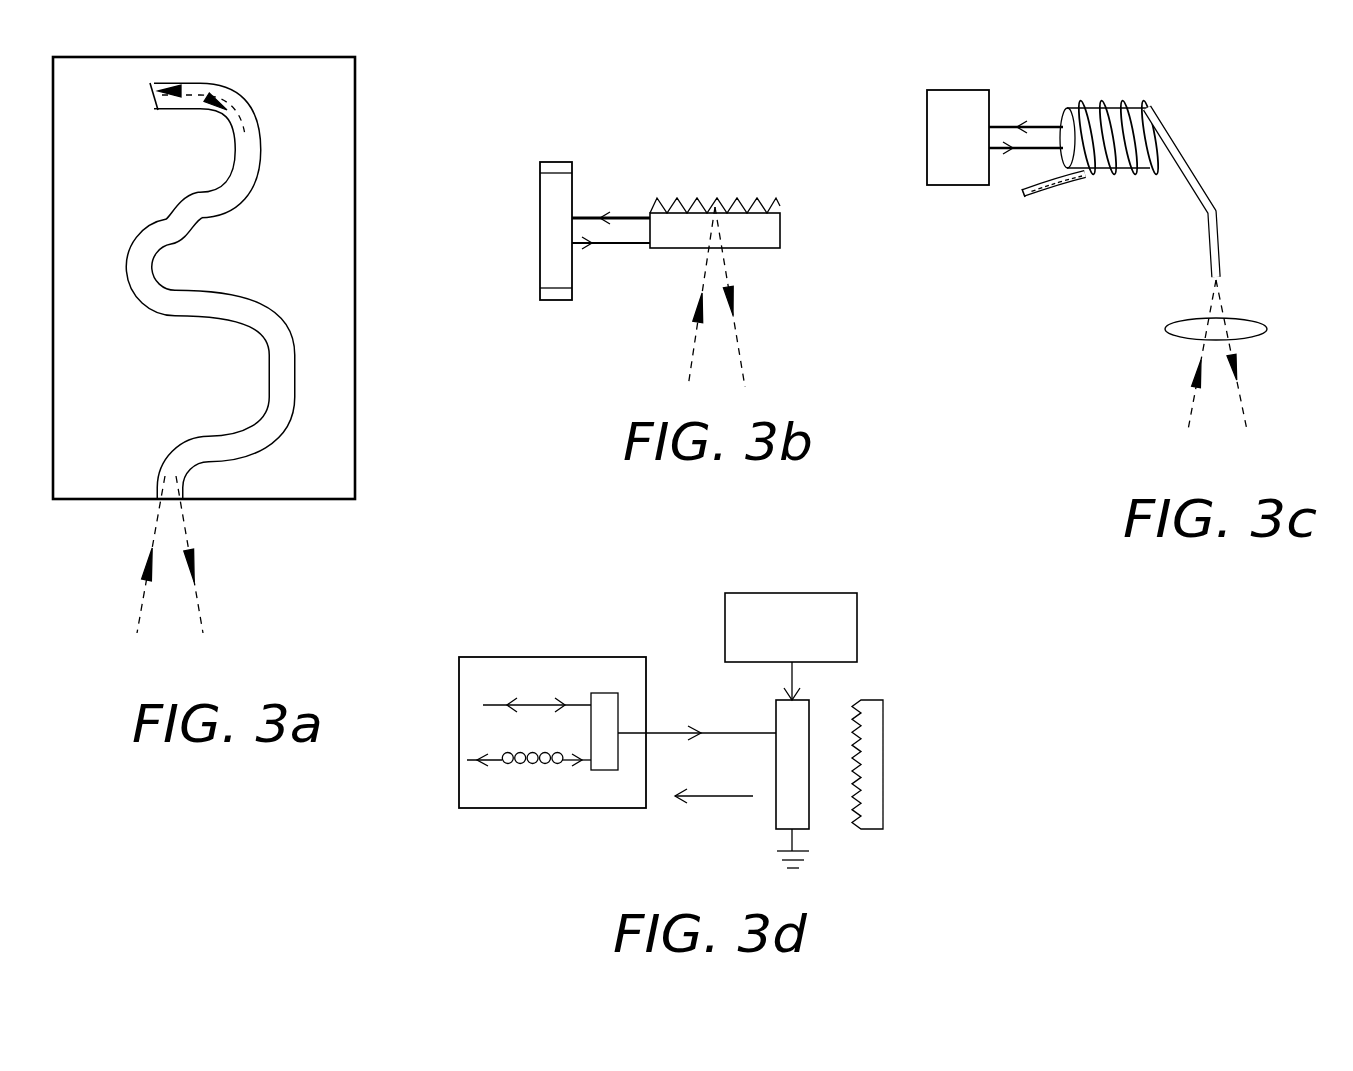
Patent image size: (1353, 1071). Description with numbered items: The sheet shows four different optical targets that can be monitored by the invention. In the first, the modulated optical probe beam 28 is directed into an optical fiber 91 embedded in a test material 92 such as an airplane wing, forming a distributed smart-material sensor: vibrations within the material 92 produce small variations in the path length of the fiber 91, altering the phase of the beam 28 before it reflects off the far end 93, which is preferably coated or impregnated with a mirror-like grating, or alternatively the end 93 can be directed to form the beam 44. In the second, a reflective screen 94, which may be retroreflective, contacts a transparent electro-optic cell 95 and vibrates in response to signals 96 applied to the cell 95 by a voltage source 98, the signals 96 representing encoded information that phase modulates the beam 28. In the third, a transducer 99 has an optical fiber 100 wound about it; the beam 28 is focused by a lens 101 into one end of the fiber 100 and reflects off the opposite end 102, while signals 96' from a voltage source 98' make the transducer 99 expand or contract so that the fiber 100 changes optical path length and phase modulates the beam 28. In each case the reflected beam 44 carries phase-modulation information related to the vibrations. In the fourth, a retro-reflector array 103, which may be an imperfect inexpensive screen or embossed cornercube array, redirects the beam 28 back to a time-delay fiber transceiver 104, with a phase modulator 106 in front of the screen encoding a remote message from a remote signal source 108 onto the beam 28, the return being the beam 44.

In FIG. 3A, the modulated optical probe beam 28 is at (140, 614).
In FIG. 3B, the modulated optical probe beam 28 is at (692, 348).
In FIG. 3C, the modulated optical probe beam 28 is at (1195, 392).
In FIG. 3D, the modulated optical probe beam 28 is at (730, 733).
In FIG. 3A, the reflected beam 44 is at (198, 598).
In FIG. 3B, the reflected beam 44 is at (738, 353).
In FIG. 3C, the reflected beam 44 is at (1242, 397).
In FIG. 3D, the reflected beam 44 is at (722, 805).
In FIG. 3A, the optical fiber 91 is at (200, 436).
In FIG. 3A, the test material 92 is at (337, 112).
In FIG. 3A, the far end of the optical fiber 93 is at (152, 96).
In FIG. 3B, the reflective screen 94 is at (732, 198).
In FIG. 3B, the transparent electro-optic cell 95 is at (782, 235).
In FIG. 3B, the signals 96 is at (611, 220).
In FIG. 3B, the voltage source 98 is at (520, 251).
In FIG. 3C, the signals 96' is at (996, 145).
In FIG. 3C, the voltage source 98' is at (915, 140).
In FIG. 3C, the transducer 99 is at (1063, 110).
In FIG. 3C, the optical fiber 100 is at (1117, 102).
In FIG. 3C, the lens 101 is at (1252, 320).
In FIG. 3C, the opposite end of the fiber 102 is at (1025, 197).
In FIG. 3D, the retro-reflector array 103 is at (866, 700).
In FIG. 3D, the time-delay fiber transceiver 104 is at (586, 655).
In FIG. 3D, the phase modulator 106 is at (811, 812).
In FIG. 3D, the remote signal source 108 is at (828, 593).